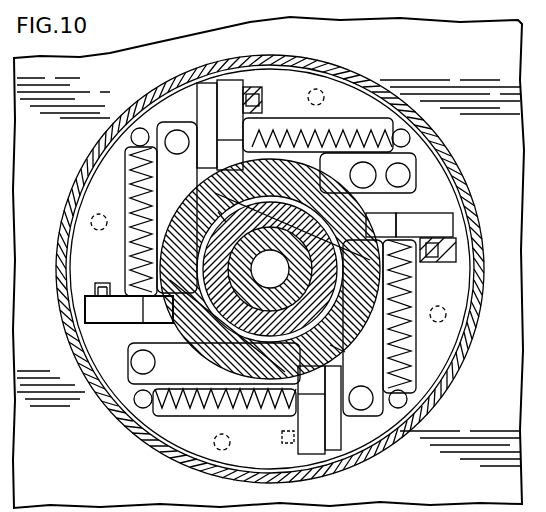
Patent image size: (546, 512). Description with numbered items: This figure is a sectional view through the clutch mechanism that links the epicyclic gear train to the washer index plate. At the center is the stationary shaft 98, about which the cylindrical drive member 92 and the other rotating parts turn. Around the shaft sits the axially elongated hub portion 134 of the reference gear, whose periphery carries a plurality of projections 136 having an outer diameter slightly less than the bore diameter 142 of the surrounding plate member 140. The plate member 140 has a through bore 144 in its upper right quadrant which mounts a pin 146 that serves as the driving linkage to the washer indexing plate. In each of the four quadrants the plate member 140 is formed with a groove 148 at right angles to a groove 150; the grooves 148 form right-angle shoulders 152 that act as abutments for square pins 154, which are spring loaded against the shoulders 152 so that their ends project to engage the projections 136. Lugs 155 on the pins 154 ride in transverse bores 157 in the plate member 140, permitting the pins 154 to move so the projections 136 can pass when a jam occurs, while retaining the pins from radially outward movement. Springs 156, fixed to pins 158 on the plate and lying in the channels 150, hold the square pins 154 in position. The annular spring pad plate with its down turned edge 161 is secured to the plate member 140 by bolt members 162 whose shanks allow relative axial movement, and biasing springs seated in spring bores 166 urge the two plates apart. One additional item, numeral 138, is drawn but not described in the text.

The cylindrical drive member 92 is at (232, 330).
The stationary shaft 98 is at (298, 236).
The hub portion 134 is at (192, 235).
The projections 136 is at (333, 358).
The follower roller 138 is at (222, 212).
The plate member 140 is at (430, 168).
The bore diameter 142 is at (206, 345).
The through bore 144 is at (356, 170).
The pin 146 is at (385, 173).
The groove 148 is at (206, 95).
The groove 150 is at (353, 128).
The shoulders 152 is at (404, 270).
The square pins 154 is at (436, 226).
The lugs 155 is at (484, 238).
The springs 156 is at (411, 300).
The transverse bores 157 is at (484, 256).
The pins 158 is at (130, 137).
The down turned edge 161 is at (68, 323).
The bolt members 162 is at (99, 214).
The spring bores 166 is at (177, 153).